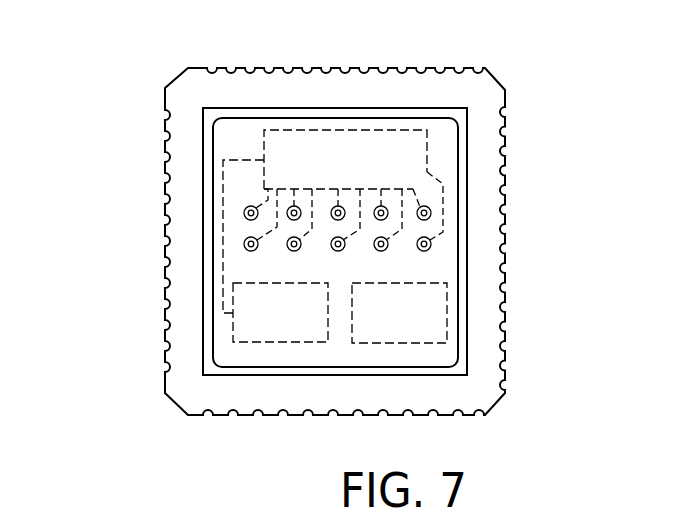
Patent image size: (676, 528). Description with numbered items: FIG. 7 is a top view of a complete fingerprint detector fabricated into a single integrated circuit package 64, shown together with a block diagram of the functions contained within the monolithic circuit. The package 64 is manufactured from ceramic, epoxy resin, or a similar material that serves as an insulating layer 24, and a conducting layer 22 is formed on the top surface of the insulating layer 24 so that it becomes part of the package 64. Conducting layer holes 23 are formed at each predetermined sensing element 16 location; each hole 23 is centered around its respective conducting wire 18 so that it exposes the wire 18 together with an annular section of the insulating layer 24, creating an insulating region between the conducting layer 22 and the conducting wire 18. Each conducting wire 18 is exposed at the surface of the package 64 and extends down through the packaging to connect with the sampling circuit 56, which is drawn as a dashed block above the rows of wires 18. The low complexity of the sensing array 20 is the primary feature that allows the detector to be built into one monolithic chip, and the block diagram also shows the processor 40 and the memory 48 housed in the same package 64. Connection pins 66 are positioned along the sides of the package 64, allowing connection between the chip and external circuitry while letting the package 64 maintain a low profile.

The sensing element 16 is at (258, 264).
The conducting wire 18 is at (431, 211).
The sensing array 20 is at (412, 272).
The conducting layer 22 is at (246, 127).
The conducting layer hole 23 is at (230, 205).
The insulating layer 24 is at (178, 100).
The processor 40 is at (236, 322).
The memory 48 is at (430, 330).
The sampling circuit 56 is at (422, 148).
The integrated circuit package 64 is at (140, 255).
The connection pins 66 is at (167, 377).